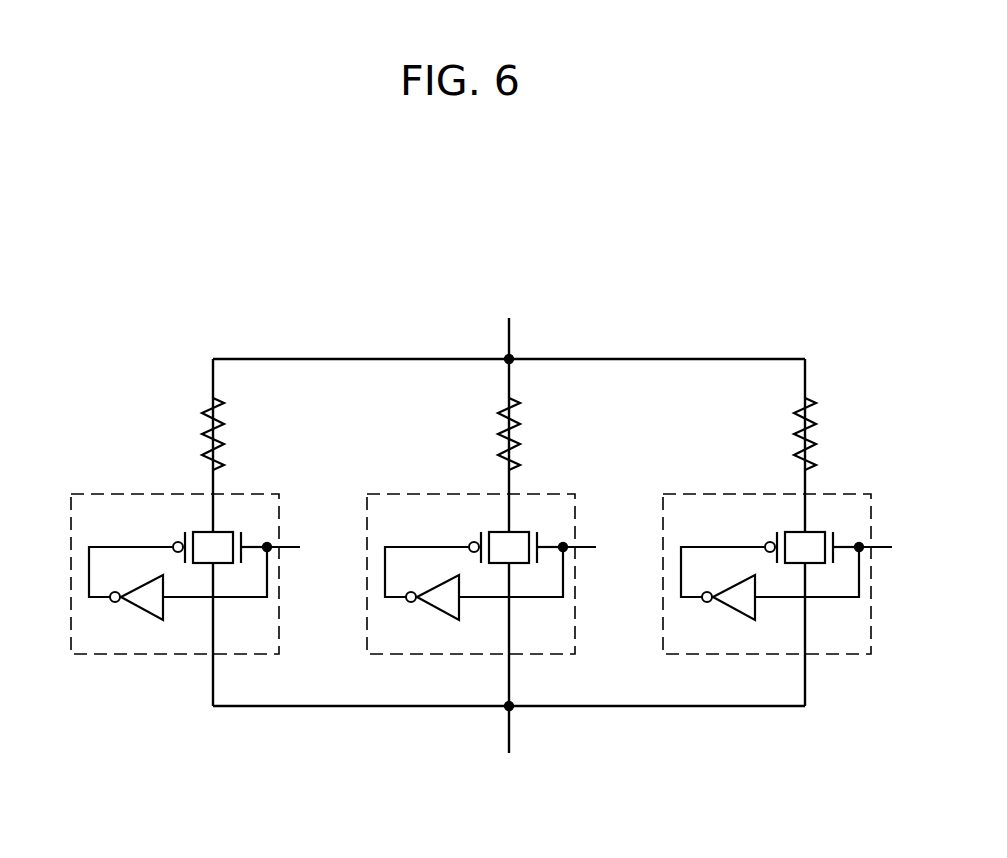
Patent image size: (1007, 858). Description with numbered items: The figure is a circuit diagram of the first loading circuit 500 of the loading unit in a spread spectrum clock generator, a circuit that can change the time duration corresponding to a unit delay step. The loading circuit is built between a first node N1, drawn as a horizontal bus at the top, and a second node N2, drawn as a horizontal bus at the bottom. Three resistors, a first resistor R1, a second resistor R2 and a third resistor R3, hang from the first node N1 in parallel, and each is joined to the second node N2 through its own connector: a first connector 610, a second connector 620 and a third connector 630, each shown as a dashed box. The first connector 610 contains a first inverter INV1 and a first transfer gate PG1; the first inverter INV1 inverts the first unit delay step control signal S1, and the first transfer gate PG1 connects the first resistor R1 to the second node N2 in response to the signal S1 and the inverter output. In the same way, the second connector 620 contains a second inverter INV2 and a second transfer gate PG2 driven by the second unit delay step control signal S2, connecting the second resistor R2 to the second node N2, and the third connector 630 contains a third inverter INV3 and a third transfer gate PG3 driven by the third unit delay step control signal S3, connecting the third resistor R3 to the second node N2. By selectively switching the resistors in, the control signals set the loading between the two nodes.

The first loading circuit 500 is at (705, 265).
The first connector 610 is at (820, 495).
The second connector 620 is at (524, 495).
The third connector 630 is at (228, 495).
The first resistor R1 is at (822, 434).
The second resistor R2 is at (526, 434).
The third resistor R3 is at (230, 434).
The first transfer gate PG1 is at (808, 533).
The second transfer gate PG2 is at (512, 533).
The third transfer gate PG3 is at (216, 533).
The first inverter INV1 is at (770, 597).
The second inverter INV2 is at (474, 597).
The third inverter INV3 is at (178, 597).
The first node N1 is at (509, 347).
The second node N2 is at (509, 721).
The first unit delay step control signal S1 is at (886, 548).
The second unit delay step control signal S2 is at (590, 548).
The third unit delay step control signal S3 is at (294, 548).